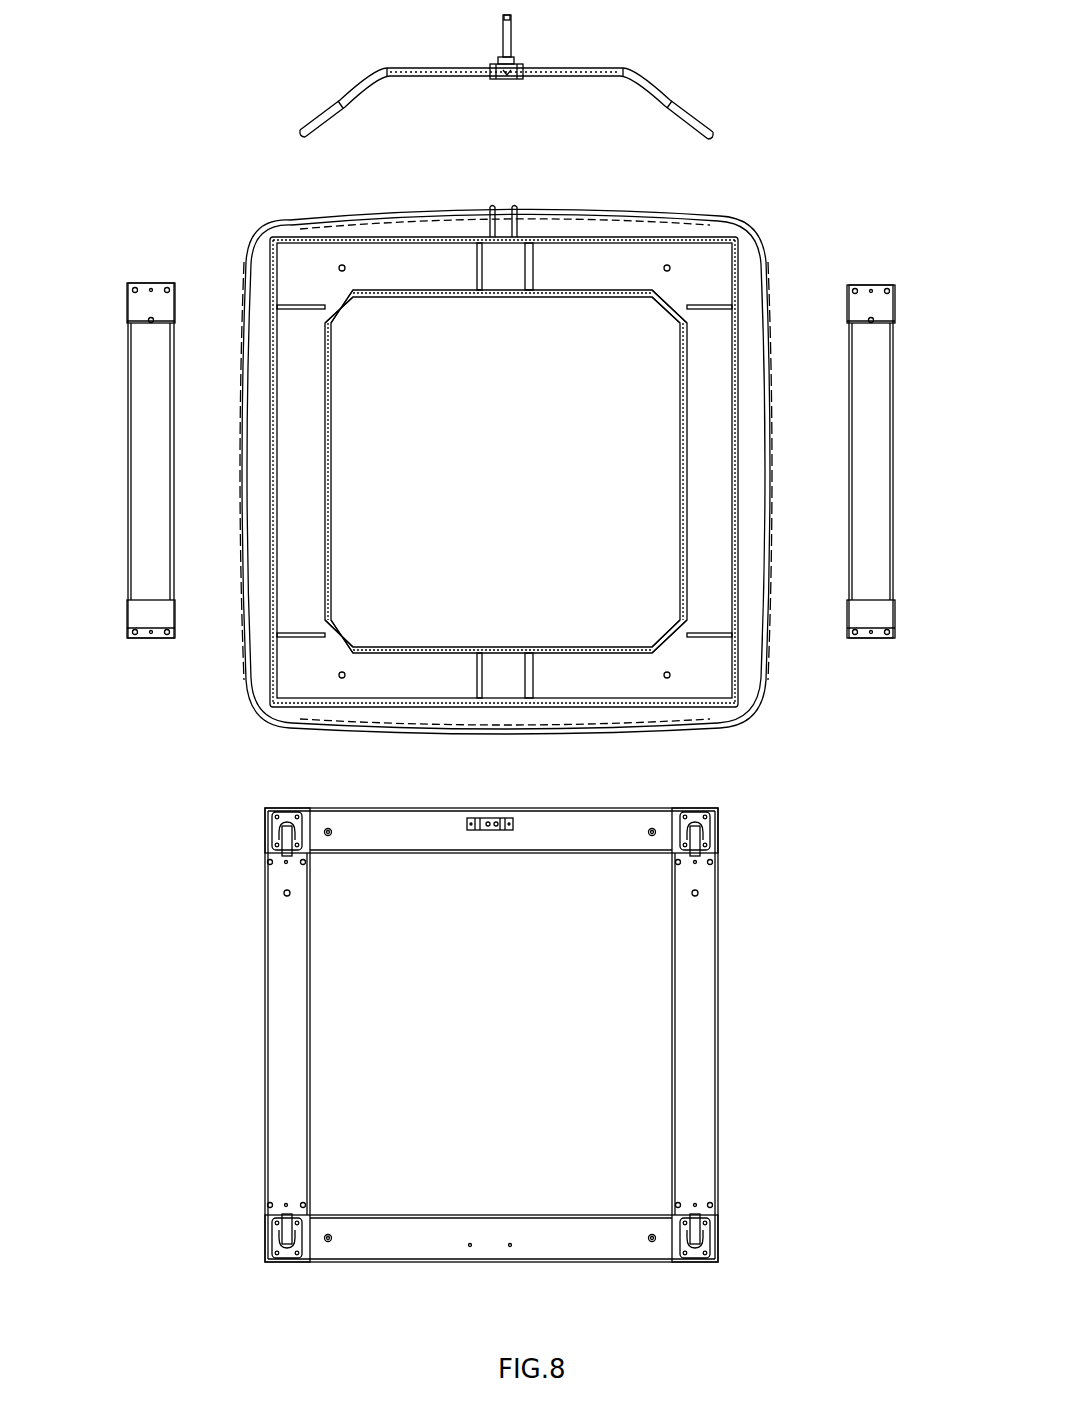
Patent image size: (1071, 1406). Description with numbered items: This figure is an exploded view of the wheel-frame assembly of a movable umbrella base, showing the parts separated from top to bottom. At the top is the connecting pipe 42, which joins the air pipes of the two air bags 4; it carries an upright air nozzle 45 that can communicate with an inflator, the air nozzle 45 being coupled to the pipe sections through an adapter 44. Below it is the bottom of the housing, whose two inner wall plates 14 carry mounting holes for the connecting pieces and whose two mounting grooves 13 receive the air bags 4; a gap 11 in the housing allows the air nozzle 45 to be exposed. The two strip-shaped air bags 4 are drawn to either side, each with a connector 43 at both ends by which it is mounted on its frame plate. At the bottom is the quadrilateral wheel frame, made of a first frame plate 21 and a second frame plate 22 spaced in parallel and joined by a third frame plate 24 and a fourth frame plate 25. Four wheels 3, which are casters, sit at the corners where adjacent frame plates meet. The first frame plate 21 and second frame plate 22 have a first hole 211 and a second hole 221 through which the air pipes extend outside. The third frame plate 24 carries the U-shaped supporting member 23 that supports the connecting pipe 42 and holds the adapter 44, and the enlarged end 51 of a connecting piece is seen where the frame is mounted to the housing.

The gap 11 is at (512, 225).
The mounting groove 13 is at (300, 580).
The inner wall plate 14 is at (370, 262).
The first frame plate 21 is at (295, 1020).
The second frame plate 22 is at (688, 1025).
The supporting member 23 is at (492, 815).
The third frame plate 24 is at (497, 845).
The fourth frame plate 25 is at (493, 1238).
The wheel 3 is at (286, 838).
The air bag 4 is at (150, 450).
The connecting pipe 42 is at (455, 74).
The connector 43 is at (142, 310).
The adapter 44 is at (511, 82).
The air nozzle 45 is at (508, 40).
The enlarged end 51 is at (654, 828).
The first hole 211 is at (284, 893).
The second hole 221 is at (698, 893).